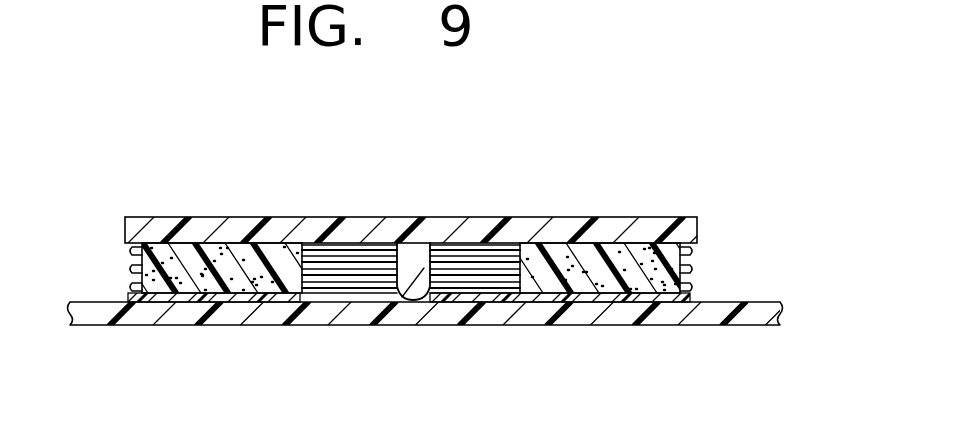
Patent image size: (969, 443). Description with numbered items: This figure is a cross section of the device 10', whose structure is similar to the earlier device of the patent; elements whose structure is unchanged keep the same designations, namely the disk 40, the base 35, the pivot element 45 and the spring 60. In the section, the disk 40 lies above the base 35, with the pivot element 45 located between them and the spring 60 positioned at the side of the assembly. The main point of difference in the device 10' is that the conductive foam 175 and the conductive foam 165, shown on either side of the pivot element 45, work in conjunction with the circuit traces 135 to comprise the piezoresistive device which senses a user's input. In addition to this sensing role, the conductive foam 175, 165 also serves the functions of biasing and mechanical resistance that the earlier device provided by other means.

The device 10' is at (439, 215).
The base 35 is at (105, 312).
The disk 40 is at (370, 228).
The pivot element 45 is at (414, 302).
The spring 60 is at (691, 271).
The circuit traces 135 is at (232, 296).
The conductive foam 165 is at (647, 278).
The conductive foam 175 is at (160, 247).